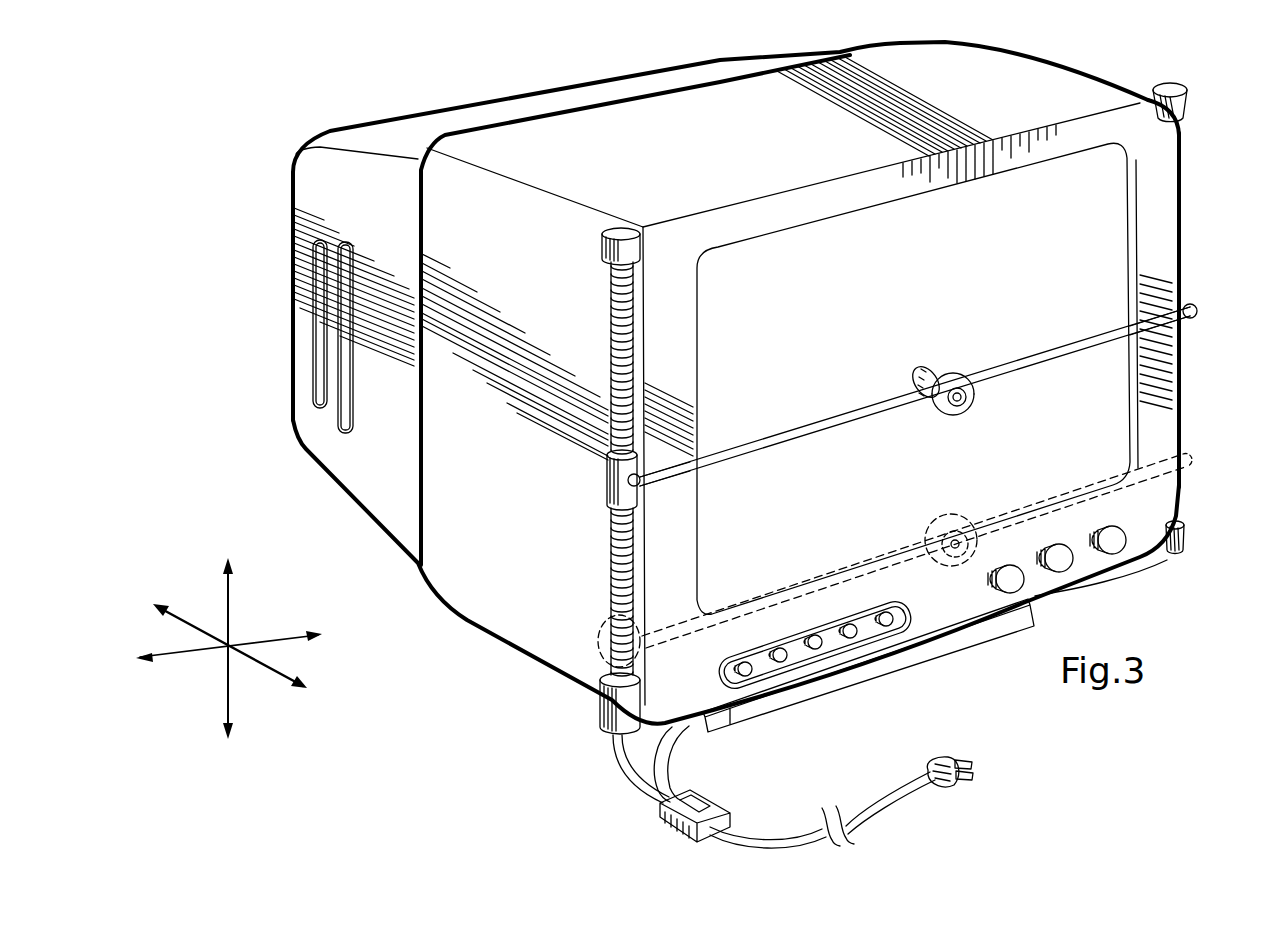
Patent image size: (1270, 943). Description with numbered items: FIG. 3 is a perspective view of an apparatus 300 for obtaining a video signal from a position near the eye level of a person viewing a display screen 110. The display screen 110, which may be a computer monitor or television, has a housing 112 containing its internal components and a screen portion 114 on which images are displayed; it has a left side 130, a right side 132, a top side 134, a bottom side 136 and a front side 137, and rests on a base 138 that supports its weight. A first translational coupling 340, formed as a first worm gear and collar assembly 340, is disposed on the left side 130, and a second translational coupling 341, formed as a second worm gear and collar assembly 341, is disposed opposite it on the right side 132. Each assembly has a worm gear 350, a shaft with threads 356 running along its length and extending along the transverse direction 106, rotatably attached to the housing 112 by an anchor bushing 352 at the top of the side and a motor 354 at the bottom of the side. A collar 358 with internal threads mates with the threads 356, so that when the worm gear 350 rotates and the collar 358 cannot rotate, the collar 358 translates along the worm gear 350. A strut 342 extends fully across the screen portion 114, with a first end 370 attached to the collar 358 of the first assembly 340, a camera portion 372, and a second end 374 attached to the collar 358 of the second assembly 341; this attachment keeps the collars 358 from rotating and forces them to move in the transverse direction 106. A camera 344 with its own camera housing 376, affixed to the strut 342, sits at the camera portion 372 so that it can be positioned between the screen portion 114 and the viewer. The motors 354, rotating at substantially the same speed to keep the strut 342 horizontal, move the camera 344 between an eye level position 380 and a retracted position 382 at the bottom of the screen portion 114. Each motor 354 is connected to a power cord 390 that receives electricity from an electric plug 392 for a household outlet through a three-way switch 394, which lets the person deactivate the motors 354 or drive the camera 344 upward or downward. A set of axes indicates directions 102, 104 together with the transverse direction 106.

The apparatus 300 is at (978, 32).
The display screen 110 is at (1044, 54).
The housing 112 is at (1077, 88).
The top side 134 is at (799, 143).
The screen portion 114 is at (1103, 218).
The right side 132 is at (1182, 228).
The left side 130 is at (513, 642).
The bottom side 136 is at (1107, 568).
The front side 137 is at (693, 708).
The base 138 is at (937, 646).
The first translational coupling 340 is at (596, 457).
The second translational coupling 341 is at (1198, 122).
The strut 342 is at (826, 410).
The camera 344 is at (962, 388).
The worm gear 350 is at (611, 306).
The anchor bushing 352 is at (604, 238).
The motor 354 is at (600, 718).
The threads 356 is at (606, 532).
The collar 358 is at (604, 468).
The first end 370 is at (680, 487).
The camera portion 372 is at (918, 418).
The second end 374 is at (1132, 305).
The camera housing 376 is at (926, 368).
The eye level position 380 is at (912, 356).
The retracted position 382 is at (946, 501).
The power cord 390 is at (612, 762).
The electric plug 392 is at (955, 784).
The switch 394 is at (661, 811).
The x axis 102 is at (270, 668).
The y axis 104 is at (257, 637).
The transverse direction 106 is at (230, 606).